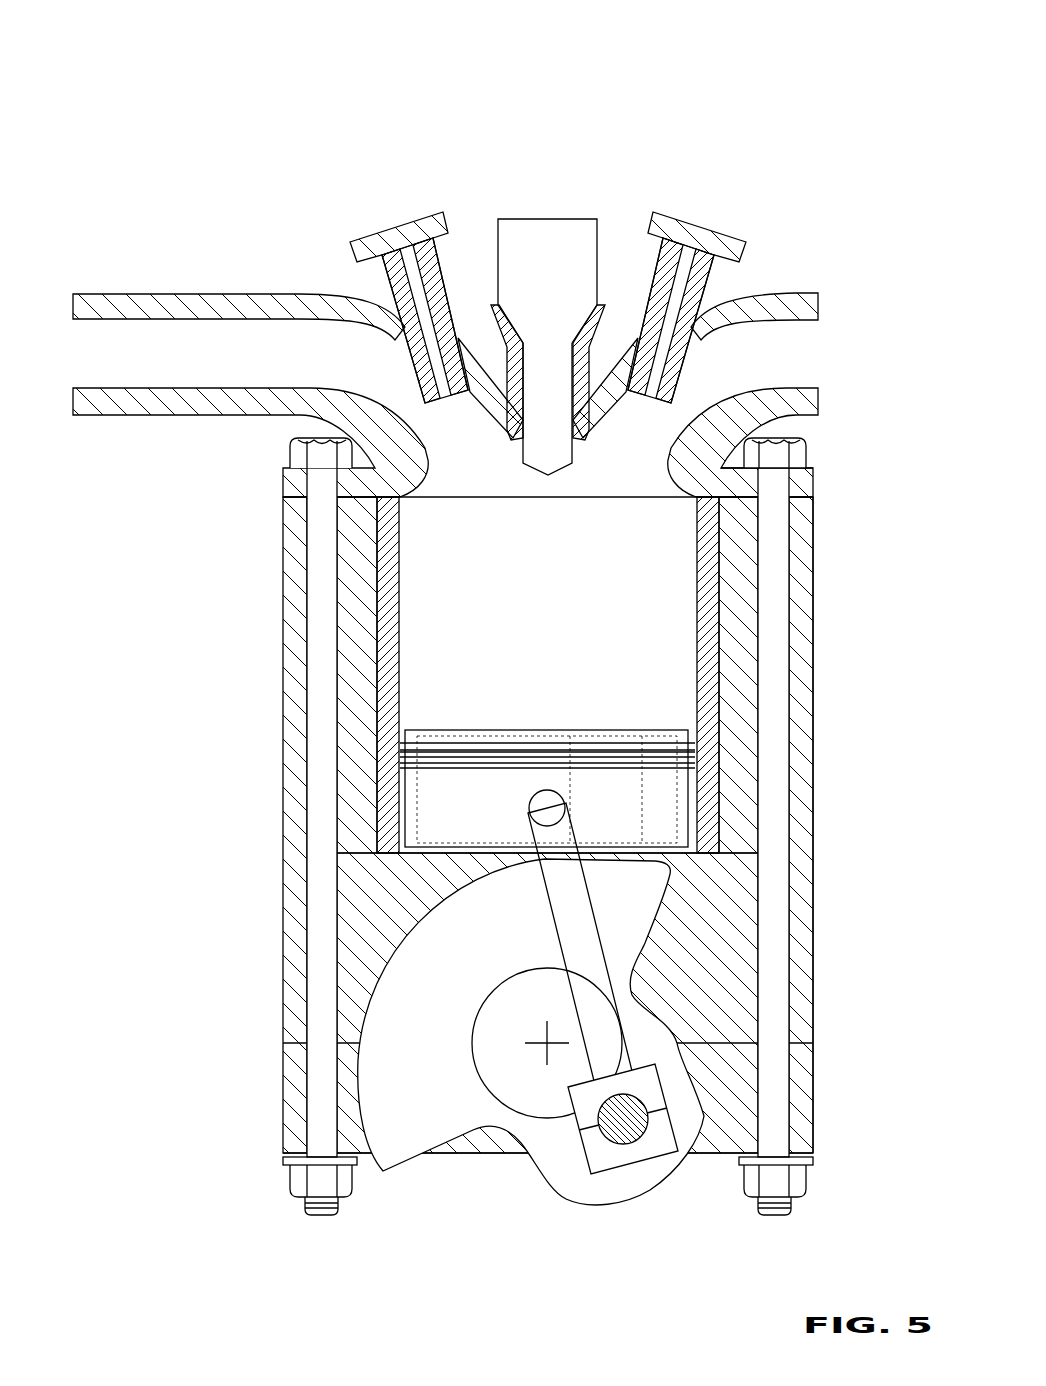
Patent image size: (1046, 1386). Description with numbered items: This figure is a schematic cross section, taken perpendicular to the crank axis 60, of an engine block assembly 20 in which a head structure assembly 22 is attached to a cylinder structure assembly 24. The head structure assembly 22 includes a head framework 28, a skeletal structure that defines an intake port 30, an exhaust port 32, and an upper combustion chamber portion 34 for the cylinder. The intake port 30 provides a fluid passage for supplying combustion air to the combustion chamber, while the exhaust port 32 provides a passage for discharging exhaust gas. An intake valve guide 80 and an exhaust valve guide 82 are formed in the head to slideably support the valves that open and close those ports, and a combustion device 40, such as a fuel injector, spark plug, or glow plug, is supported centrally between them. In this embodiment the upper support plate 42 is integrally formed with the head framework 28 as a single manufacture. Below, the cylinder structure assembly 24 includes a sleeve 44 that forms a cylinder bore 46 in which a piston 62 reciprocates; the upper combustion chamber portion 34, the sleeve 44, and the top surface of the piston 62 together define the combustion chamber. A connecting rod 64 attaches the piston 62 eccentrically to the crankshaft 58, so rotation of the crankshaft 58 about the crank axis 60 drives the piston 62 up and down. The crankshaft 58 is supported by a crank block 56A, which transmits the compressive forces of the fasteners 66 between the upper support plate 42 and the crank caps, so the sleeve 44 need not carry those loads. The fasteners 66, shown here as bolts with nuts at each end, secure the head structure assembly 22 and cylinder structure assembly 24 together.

The engine block assembly 20 is at (806, 61).
The head structure assembly 22 is at (787, 291).
The cylinder structure assembly 24 is at (817, 800).
The head framework 28 is at (183, 300).
The intake port 30 is at (200, 350).
The exhaust port 32 is at (797, 355).
The upper combustion chamber portion 34 is at (572, 480).
The combustion device 40 is at (542, 232).
The upper support plate 42 is at (803, 482).
The sleeve 44 is at (710, 625).
The cylinder bore 46 is at (402, 593).
The crank block 56A is at (802, 883).
The crankshaft 58 is at (461, 1095).
The crank axis 60 is at (547, 1040).
The piston 62 is at (477, 783).
The connecting rod 64 is at (564, 892).
The fasteners 66 is at (322, 762).
The intake valve guide 80 is at (385, 285).
The exhaust valve guide 82 is at (720, 282).